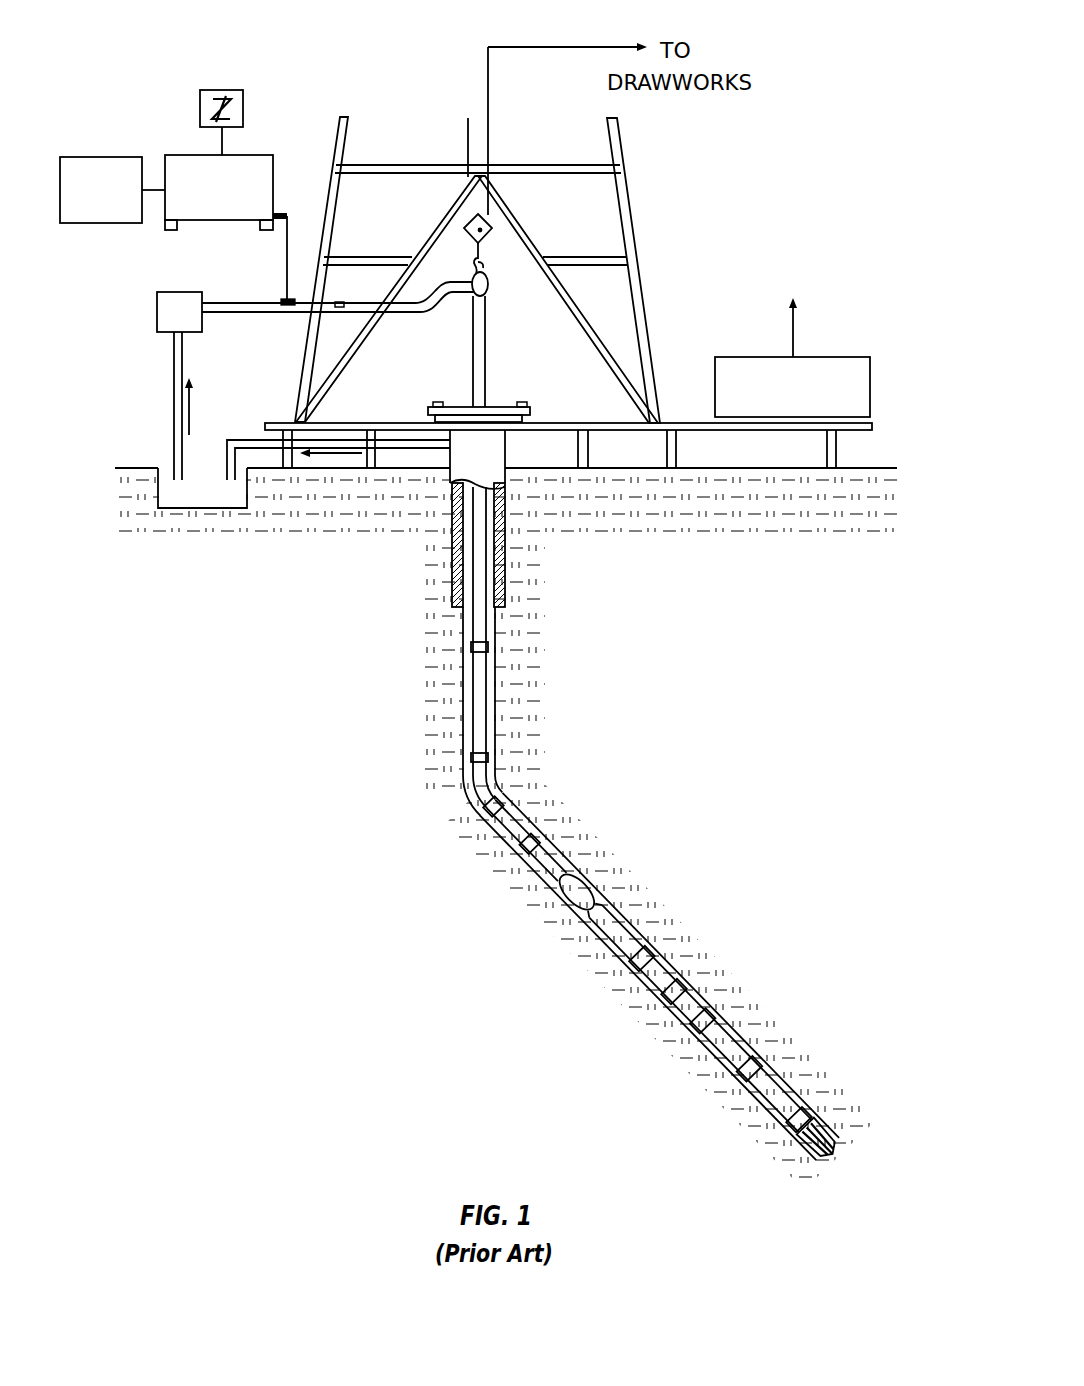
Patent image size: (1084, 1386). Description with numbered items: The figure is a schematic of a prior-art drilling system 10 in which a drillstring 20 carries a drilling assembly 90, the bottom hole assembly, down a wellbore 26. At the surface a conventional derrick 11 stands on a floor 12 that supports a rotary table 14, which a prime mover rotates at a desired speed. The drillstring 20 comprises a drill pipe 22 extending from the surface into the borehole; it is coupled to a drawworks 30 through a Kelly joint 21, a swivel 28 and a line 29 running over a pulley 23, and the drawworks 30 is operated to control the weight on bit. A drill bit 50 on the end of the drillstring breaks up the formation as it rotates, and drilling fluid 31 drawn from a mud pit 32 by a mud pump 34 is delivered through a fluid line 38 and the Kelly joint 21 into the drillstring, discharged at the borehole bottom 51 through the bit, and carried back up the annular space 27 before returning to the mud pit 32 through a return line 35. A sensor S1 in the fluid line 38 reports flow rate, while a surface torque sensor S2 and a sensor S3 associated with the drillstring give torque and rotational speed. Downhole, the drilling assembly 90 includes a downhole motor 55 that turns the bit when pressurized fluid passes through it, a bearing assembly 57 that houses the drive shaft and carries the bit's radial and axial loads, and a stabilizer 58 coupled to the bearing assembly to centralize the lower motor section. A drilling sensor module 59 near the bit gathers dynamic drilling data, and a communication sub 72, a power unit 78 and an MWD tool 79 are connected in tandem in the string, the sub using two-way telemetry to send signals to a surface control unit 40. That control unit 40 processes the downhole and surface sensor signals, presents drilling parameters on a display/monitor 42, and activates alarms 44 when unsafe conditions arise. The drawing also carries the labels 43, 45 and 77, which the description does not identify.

The drilling system 10 is at (390, 63).
The derrick 11 is at (640, 272).
The floor 12 is at (660, 423).
The rotary table 14 is at (497, 405).
The drillstring 20 is at (492, 698).
The Kelly joint 21 is at (487, 347).
The drill pipe 22 is at (462, 677).
The pulley 23 is at (487, 233).
The wellbore 26 is at (498, 785).
The annular space 27 is at (515, 815).
The swivel 28 is at (467, 297).
The line 29 is at (488, 147).
The drawworks 30 is at (848, 357).
The drilling fluid 31 is at (170, 497).
The mud pit 32 is at (228, 500).
The mud pump 34 is at (172, 290).
The return line 35 is at (417, 443).
The fluid line 38 is at (275, 313).
The surface control unit 40 is at (188, 153).
The display/monitor 42 is at (222, 90).
The sensor 43 is at (283, 300).
The alarms 44 is at (122, 223).
The signal line 45 is at (282, 213).
The drill bit 50 is at (838, 1122).
The borehole bottom 51 is at (813, 1160).
The downhole motor 55 is at (678, 978).
The bearing assembly 57 is at (792, 1077).
The stabilizer 58 is at (802, 1097).
The drilling sensor module 59 is at (797, 1130).
The communication sub 72 is at (468, 783).
The stabilizer 77 is at (568, 902).
The power unit 78 is at (492, 828).
The MWD tool 79 is at (510, 848).
The drilling assembly 90 is at (687, 870).
The sensor S1 is at (348, 283).
The surface torque sensor S2 is at (528, 403).
The sensor S3 is at (428, 403).